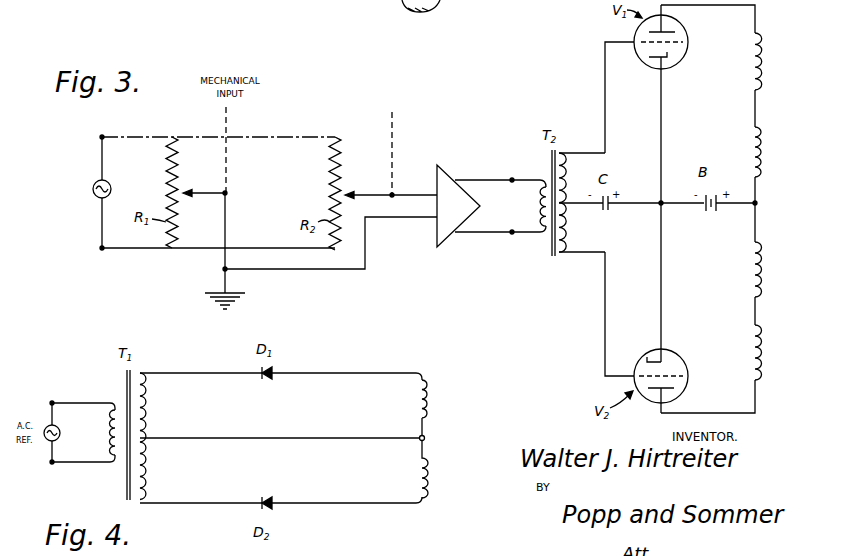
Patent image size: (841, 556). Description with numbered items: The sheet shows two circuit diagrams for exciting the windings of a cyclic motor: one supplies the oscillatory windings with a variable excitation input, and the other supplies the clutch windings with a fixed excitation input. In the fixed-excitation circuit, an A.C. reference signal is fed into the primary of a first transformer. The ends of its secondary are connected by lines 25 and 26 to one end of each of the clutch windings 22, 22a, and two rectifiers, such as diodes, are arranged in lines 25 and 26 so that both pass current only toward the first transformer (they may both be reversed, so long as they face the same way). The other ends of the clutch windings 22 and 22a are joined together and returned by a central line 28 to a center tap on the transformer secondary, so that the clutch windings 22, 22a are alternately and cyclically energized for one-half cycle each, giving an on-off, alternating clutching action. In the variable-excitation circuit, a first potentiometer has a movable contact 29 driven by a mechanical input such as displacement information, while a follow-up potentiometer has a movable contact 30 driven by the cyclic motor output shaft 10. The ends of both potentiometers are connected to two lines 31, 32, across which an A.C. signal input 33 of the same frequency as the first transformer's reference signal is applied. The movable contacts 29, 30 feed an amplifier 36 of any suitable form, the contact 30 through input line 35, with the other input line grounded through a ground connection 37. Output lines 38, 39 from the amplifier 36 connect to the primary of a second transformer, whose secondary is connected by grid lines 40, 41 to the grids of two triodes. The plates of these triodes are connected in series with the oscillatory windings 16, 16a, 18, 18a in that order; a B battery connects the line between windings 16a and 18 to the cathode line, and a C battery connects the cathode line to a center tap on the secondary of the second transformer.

In FIG. 3, the cyclic motor output shaft 10 is at (384, 147).
In FIG. 3, the line 31 is at (256, 136).
In FIG. 3, the A.C. signal input 33 is at (92, 186).
In FIG. 3, the movable contact 29 is at (206, 191).
In FIG. 3, the line 32 is at (257, 247).
In FIG. 3, the ground connection line 37 is at (326, 272).
In FIG. 3, the movable contact 30 is at (366, 193).
In FIG. 3, the input line 35 is at (407, 193).
In FIG. 3, the amplifier 36 is at (447, 167).
In FIG. 3, the output line 38 is at (490, 178).
In FIG. 3, the output line 39 is at (490, 236).
In FIG. 3, the grid line 40 is at (605, 98).
In FIG. 3, the grid line 41 is at (605, 310).
In FIG. 3, the oscillatory winding 16 is at (766, 60).
In FIG. 3, the oscillatory winding 16a is at (766, 144).
In FIG. 3, the oscillatory winding 18 is at (766, 268).
In FIG. 3, the oscillatory winding 18a is at (766, 346).
In FIG. 4, the line 25 is at (333, 372).
In FIG. 4, the central line 28 is at (312, 436).
In FIG. 4, the line 26 is at (339, 506).
In FIG. 4, the clutch winding 22 is at (431, 402).
In FIG. 4, the clutch winding 22a is at (431, 478).